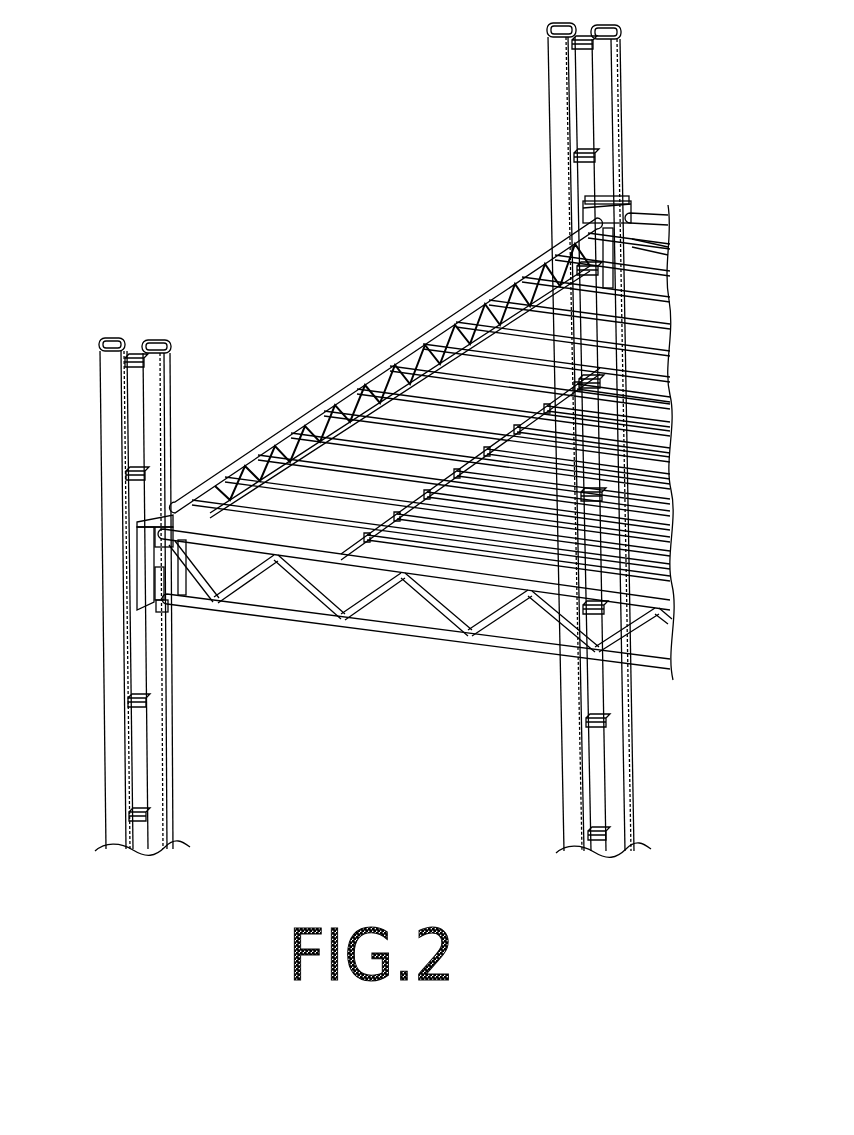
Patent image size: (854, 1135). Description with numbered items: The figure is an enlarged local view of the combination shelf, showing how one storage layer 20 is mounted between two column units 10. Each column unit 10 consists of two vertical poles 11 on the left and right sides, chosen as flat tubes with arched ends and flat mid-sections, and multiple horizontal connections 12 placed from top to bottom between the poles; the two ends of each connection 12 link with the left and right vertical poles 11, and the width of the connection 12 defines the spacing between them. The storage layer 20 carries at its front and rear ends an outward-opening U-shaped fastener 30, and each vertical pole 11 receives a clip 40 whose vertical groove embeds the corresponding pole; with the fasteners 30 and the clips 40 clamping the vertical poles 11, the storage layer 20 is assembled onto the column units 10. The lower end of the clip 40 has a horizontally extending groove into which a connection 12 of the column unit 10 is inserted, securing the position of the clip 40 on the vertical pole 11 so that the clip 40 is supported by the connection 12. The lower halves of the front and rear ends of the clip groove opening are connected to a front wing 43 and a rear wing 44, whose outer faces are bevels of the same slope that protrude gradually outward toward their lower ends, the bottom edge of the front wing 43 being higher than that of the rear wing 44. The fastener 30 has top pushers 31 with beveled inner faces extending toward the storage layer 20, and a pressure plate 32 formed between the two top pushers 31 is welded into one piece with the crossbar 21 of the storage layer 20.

The column unit 10 is at (377, 445).
The vertical pole 11 is at (112, 752).
The connection 12 is at (146, 814).
The storage layer 20 is at (515, 275).
The crossbar 21 is at (440, 634).
The U-shaped fastener 30 is at (188, 510).
The top pusher 31 is at (148, 592).
The pressure plate 32 is at (172, 582).
The clip 40 is at (140, 518).
The front wing 43 is at (170, 615).
The rear wing 44 is at (248, 606).